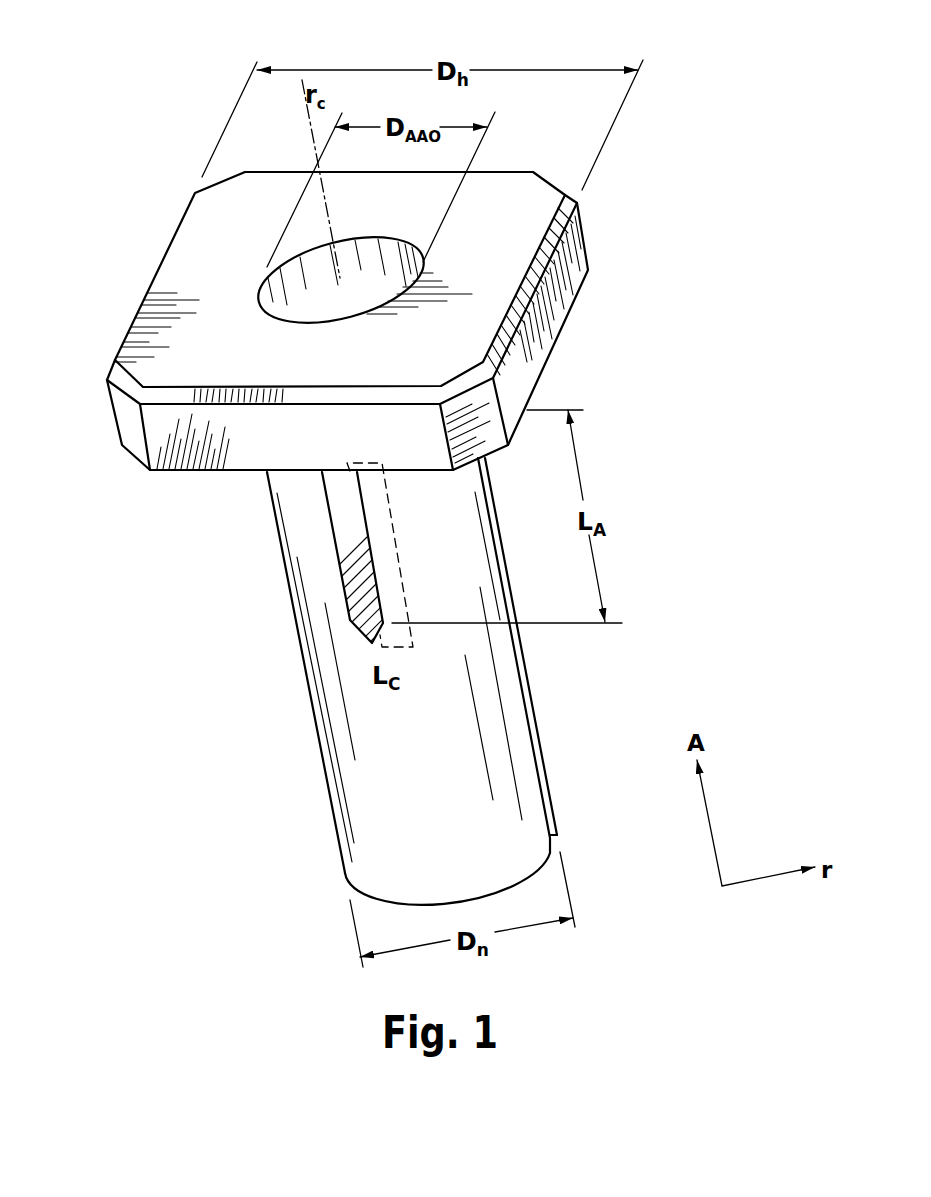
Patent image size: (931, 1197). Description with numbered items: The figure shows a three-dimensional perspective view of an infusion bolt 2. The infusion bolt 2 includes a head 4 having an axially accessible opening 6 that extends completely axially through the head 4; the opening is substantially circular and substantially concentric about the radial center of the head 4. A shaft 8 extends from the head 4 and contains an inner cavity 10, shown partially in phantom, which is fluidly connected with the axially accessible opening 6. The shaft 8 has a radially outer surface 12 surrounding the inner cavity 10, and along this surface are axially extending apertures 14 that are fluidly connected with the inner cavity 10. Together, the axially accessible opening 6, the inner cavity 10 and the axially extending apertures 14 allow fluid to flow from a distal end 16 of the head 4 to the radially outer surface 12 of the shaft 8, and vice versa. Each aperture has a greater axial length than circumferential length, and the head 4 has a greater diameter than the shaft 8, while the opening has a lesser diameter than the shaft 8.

The infusion bolt 2 is at (117, 122).
The head 4 is at (408, 441).
The axially accessible opening 6 is at (297, 272).
The shaft 8 is at (418, 766).
The inner cavity 10 is at (353, 512).
The radially outer surface 12 is at (328, 681).
The axially extending apertures 14 is at (343, 588).
The distal end 16 is at (150, 320).